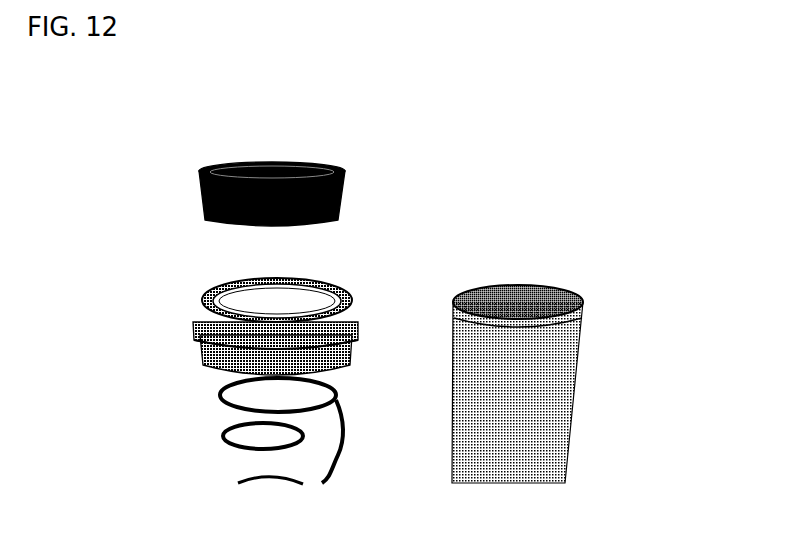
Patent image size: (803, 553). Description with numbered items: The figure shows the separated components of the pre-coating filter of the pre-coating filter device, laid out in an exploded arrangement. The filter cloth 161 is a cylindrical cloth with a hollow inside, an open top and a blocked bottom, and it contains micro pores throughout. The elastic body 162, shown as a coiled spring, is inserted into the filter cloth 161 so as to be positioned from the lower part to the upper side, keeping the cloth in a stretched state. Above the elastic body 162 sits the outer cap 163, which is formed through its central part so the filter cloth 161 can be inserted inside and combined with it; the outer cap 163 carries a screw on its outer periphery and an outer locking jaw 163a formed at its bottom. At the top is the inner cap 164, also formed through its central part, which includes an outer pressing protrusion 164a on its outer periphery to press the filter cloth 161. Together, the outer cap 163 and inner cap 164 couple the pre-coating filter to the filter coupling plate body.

The filter cloth 161 is at (540, 410).
The elastic body 162 is at (225, 447).
The outer cap 163 is at (202, 345).
The outer locking jaw 163a is at (188, 346).
The inner cap 164 is at (225, 162).
The outer pressing protrusion 164a is at (340, 206).